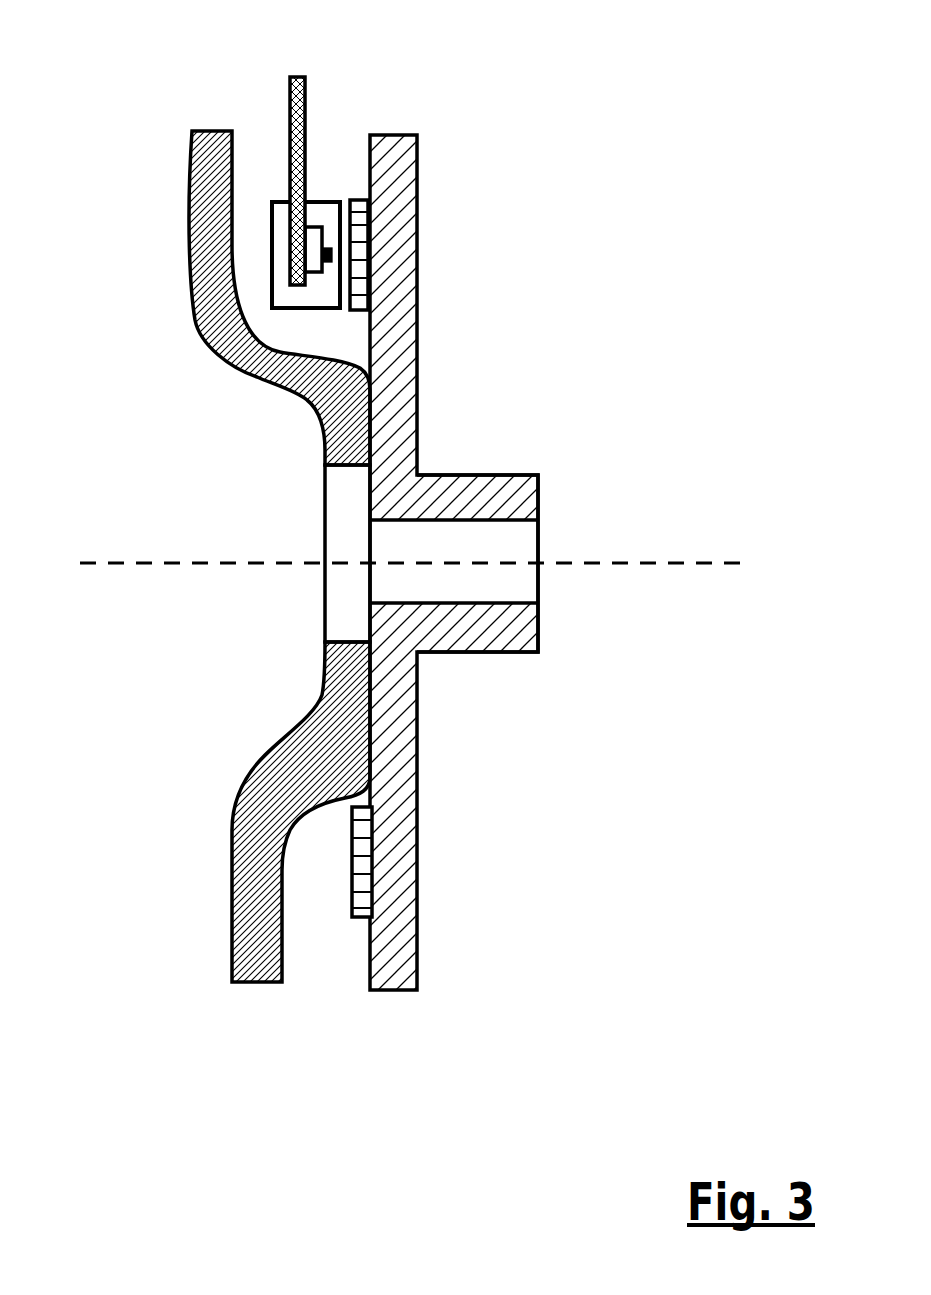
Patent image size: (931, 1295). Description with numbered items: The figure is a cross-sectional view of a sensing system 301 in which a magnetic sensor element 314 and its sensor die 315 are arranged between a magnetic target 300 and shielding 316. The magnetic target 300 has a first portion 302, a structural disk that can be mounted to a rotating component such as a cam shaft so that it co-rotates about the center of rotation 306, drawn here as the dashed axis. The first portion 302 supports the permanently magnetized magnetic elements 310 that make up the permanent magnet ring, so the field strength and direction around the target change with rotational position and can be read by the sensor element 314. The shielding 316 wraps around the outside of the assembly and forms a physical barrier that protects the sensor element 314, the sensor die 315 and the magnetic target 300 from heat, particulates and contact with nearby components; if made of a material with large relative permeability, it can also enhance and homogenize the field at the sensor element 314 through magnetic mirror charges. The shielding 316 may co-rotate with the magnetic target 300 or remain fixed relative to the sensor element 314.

The magnetic target 300 is at (527, 465).
The sensing system 301 is at (552, 193).
The first portion 302 is at (395, 268).
The center of rotation 306 is at (655, 563).
The magnetic elements 310 is at (360, 215).
The sensor element 314 is at (326, 250).
The sensor die 315 is at (282, 232).
The shielding 316 is at (188, 249).